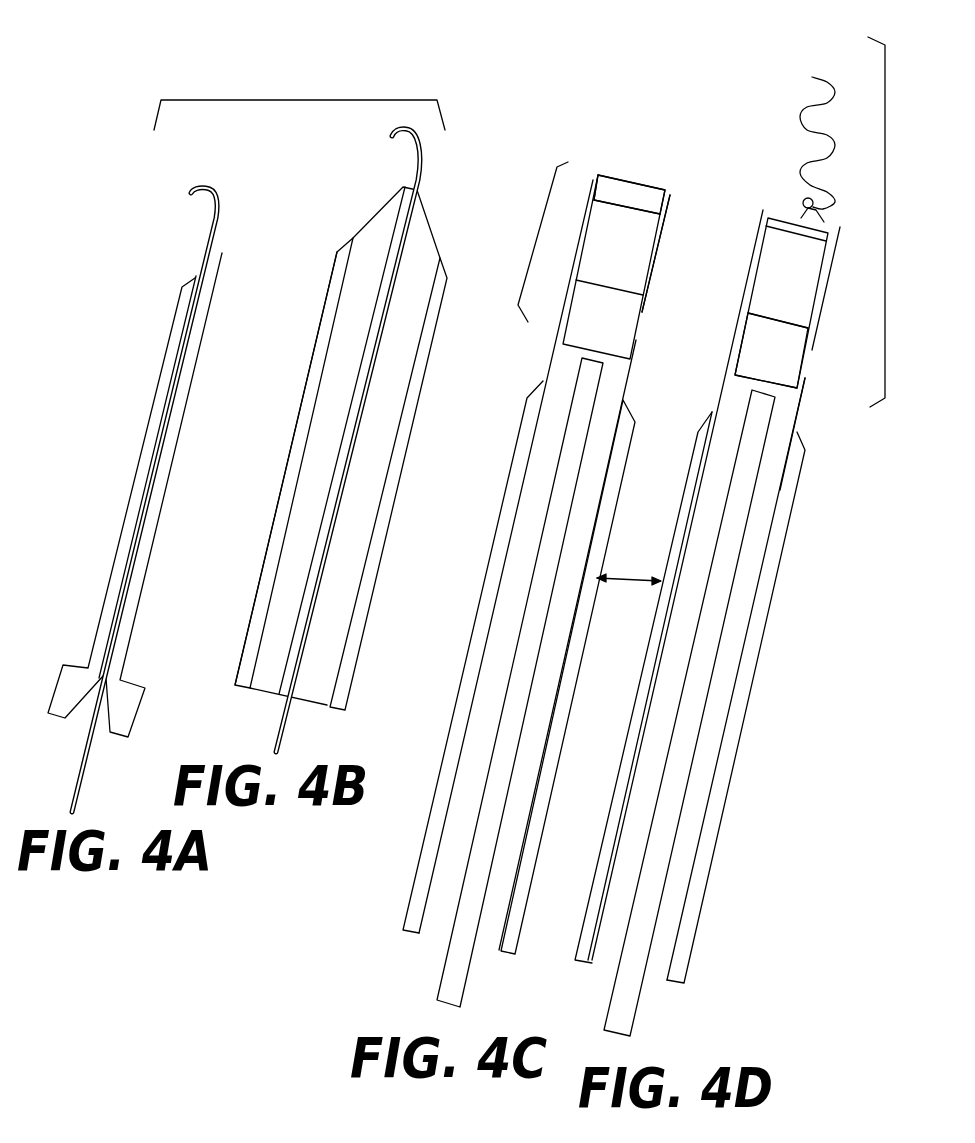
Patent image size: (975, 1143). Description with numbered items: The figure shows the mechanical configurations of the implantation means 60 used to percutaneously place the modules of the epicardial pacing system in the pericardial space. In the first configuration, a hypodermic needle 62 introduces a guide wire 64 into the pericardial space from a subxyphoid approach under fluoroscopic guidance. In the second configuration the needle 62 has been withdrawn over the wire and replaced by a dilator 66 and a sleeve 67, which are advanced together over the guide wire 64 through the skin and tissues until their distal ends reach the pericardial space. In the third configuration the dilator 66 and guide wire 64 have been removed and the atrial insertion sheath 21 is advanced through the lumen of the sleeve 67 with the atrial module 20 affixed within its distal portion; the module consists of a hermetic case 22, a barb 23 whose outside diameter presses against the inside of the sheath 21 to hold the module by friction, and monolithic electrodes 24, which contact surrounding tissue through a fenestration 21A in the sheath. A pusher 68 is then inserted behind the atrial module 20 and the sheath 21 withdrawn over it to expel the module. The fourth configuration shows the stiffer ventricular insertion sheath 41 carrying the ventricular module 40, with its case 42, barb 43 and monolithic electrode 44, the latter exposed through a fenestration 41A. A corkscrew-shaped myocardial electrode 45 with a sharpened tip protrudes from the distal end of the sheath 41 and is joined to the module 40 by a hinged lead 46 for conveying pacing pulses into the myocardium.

In FIG. 4C, the atrial module 20 is at (540, 222).
In FIG. 4C, the atrial insertion sheath 21 is at (548, 365).
In FIG. 4C, the fenestration 21A is at (640, 323).
In FIG. 4C, the case 22 is at (630, 260).
In FIG. 4C, the barb 23 is at (587, 200).
In FIG. 4C, the monolithic electrode 24 is at (621, 329).
In FIG. 4D, the ventricular module 40 is at (887, 208).
In FIG. 4D, the ventricular insertion sheath 41 is at (798, 410).
In FIG. 4D, the fenestration 41A is at (810, 357).
In FIG. 4D, the case 42 is at (802, 291).
In FIG. 4D, the barb 43 is at (832, 268).
In FIG. 4D, the monolithic electrode 44 is at (791, 356).
In FIG. 4D, the myocardial electrode 45 is at (812, 77).
In FIG. 4D, the hinged lead 46 is at (800, 217).
In FIG. 4B, the implantation means 60 is at (325, 100).
In FIG. 4A, the hypodermic needle 62 is at (133, 484).
In FIG. 4A, the guide wire 64 is at (88, 728).
In FIG. 4B, the guide wire 64 is at (278, 712).
In FIG. 4B, the dilator 66 is at (325, 526).
In FIG. 4B, the sleeve 67 is at (290, 447).
In FIG. 4C, the sleeve 67 is at (625, 578).
In FIG. 4C, the pusher 68 is at (467, 972).
In FIG. 4D, the pusher 68 is at (617, 987).